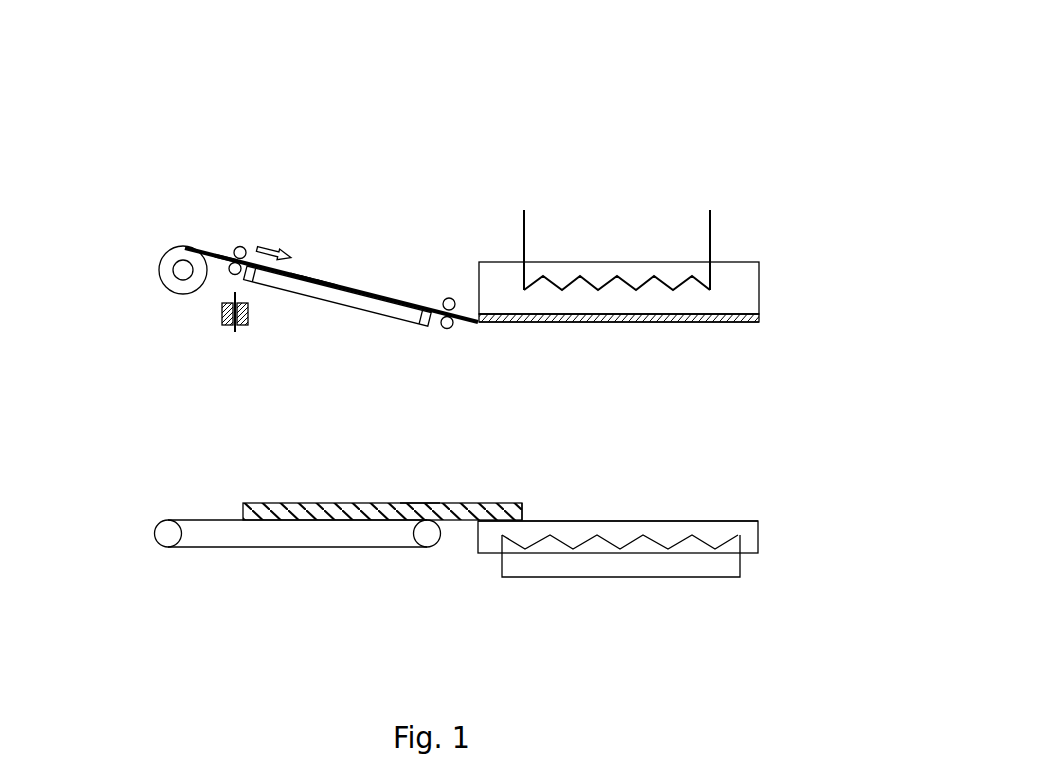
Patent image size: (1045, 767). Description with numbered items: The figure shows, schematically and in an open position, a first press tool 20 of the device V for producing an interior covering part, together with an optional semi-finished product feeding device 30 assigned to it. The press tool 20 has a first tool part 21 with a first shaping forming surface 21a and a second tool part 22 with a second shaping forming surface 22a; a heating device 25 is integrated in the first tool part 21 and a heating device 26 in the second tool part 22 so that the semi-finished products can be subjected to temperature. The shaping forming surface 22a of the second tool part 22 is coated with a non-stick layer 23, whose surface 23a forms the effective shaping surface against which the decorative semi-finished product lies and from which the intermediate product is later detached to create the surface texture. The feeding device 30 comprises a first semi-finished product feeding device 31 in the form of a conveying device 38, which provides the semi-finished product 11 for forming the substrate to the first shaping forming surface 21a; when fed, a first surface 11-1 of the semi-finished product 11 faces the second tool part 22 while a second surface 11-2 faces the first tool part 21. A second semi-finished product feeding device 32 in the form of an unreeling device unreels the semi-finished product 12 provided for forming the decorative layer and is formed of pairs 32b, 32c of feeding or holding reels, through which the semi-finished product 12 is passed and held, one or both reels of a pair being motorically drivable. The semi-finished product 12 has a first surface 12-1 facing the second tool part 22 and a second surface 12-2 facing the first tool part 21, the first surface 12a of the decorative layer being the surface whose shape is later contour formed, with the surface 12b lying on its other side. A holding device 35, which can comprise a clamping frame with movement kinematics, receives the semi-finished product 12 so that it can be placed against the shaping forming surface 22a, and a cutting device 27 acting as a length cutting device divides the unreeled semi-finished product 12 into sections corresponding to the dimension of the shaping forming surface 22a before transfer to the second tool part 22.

The device for producing an interior covering part V is at (667, 60).
The semi-finished product feeding device 30 is at (158, 217).
The first semi-finished product feeding device 31 is at (160, 272).
The semi-finished product for forming the decorative layer 12 is at (382, 295).
The first surface 12-1 is at (299, 270).
The trailing end of recording medium 12-2 is at (226, 268).
The first surface of the decorative layer 12a is at (324, 278).
The second surface of recording medium 12b is at (308, 288).
The holding device 35 is at (372, 310).
The second semi-finished product feeding device 32 is at (458, 315).
The pair of feeding or holding reels 32b is at (236, 247).
The pair of feeding or holding reels 32c is at (445, 299).
The cutter 27 is at (242, 332).
The first press tool 20 is at (496, 228).
The second tool part 22 is at (727, 272).
The second shaping forming surface 22a is at (620, 320).
The non-stick layer 23 is at (760, 315).
The surface of the non-stick layer 23a is at (696, 331).
The heating device 26 is at (604, 280).
The semi-finished product for forming the substrate 11 is at (323, 500).
The first surface 11-1 is at (420, 502).
The second surface 11-2 is at (462, 523).
The conveyor belt 38 is at (250, 538).
The first tool part 21 is at (748, 530).
The first shaping forming surface 21a is at (615, 522).
The heating device 25 is at (557, 577).